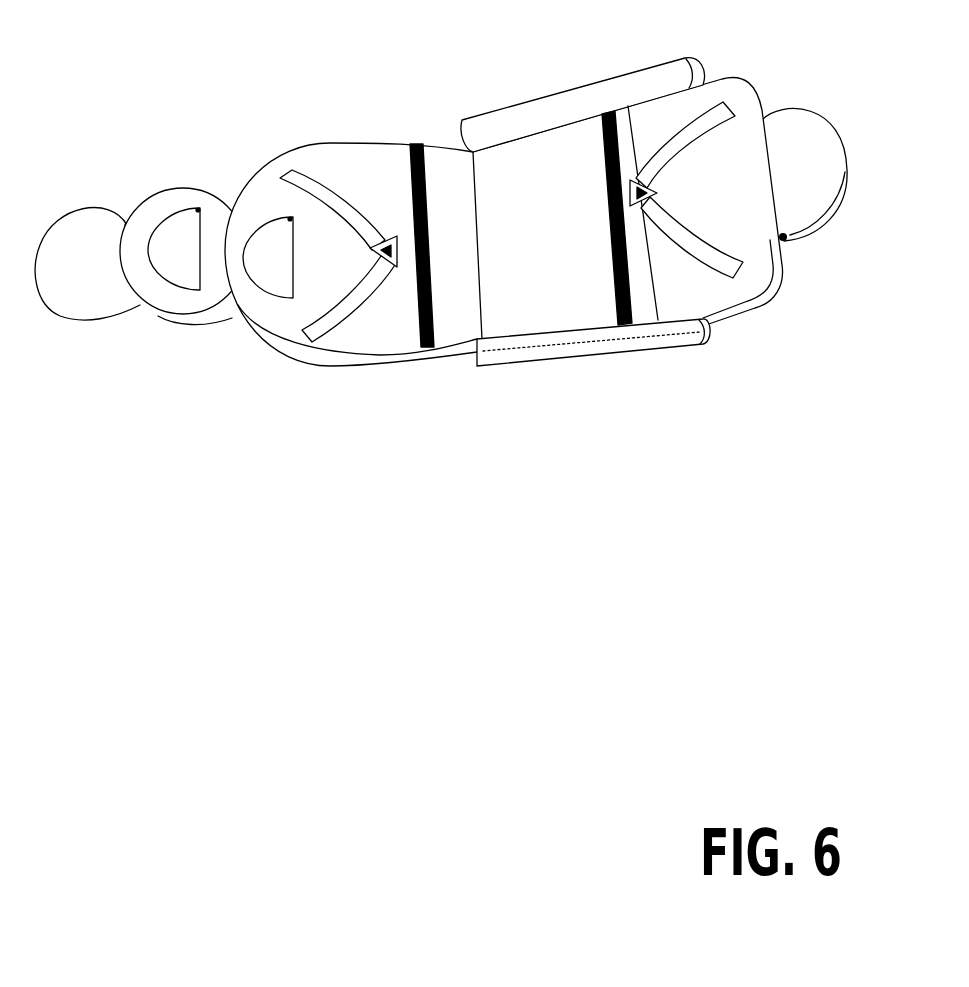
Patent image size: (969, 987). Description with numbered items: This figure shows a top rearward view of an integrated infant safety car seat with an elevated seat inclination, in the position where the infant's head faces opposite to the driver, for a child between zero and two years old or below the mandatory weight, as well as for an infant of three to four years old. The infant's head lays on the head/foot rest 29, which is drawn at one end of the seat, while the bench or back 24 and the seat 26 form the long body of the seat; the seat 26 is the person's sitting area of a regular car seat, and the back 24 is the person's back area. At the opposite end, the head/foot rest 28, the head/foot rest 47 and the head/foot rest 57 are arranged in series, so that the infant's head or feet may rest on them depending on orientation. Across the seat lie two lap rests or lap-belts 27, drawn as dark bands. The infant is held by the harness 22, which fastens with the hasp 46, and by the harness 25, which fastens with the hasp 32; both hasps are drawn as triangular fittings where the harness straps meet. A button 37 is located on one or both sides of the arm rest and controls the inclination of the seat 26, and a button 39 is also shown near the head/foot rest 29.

The harness 22 is at (338, 200).
The back 24 is at (365, 327).
The harness 25 is at (705, 115).
The seat 26 is at (703, 295).
The lap-belt 27 is at (430, 347).
The head/foot rest 28 is at (278, 222).
The head/foot rest 29 is at (827, 158).
The hasp 32 is at (637, 177).
The button 37 is at (487, 350).
The button 39 is at (790, 247).
The hasp 46 is at (393, 237).
The head/foot rest 47 is at (202, 192).
The head/foot rest 57 is at (82, 228).